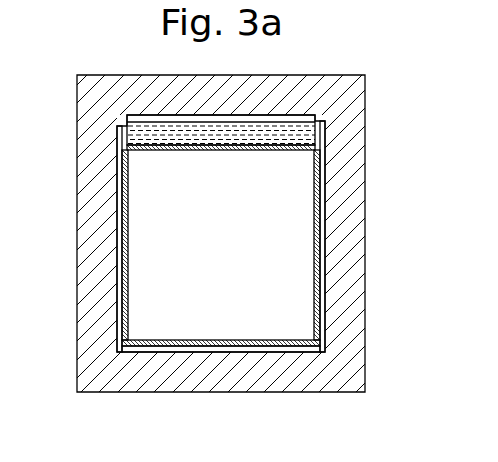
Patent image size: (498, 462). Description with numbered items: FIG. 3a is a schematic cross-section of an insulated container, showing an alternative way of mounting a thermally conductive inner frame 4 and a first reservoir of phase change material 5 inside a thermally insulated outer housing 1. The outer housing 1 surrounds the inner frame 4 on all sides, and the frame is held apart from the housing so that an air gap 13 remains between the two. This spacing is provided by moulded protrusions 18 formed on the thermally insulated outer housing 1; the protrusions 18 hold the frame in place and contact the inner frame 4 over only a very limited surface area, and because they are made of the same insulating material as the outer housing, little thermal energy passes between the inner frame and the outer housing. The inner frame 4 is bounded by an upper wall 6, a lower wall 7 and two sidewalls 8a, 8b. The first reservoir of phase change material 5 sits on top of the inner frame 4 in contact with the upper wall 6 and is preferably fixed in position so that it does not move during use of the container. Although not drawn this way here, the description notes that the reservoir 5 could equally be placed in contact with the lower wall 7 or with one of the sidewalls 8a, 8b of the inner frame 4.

The thermally insulated outer housing 1 is at (345, 291).
The thermally conductive inner frame 4 is at (325, 198).
The first reservoir of phase change material 5 is at (272, 115).
The upper wall of the inner frame 6 is at (128, 148).
The bottom layer 7 is at (160, 341).
The sidewall of the inner frame 8a is at (124, 254).
The sidewall of the inner frame 8b is at (318, 243).
The air gap 13 is at (303, 350).
The moulded protrusions 18 is at (118, 125).